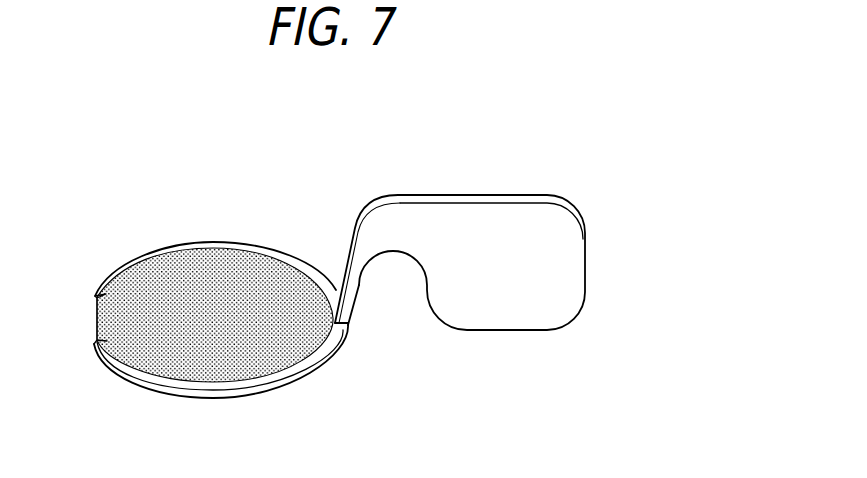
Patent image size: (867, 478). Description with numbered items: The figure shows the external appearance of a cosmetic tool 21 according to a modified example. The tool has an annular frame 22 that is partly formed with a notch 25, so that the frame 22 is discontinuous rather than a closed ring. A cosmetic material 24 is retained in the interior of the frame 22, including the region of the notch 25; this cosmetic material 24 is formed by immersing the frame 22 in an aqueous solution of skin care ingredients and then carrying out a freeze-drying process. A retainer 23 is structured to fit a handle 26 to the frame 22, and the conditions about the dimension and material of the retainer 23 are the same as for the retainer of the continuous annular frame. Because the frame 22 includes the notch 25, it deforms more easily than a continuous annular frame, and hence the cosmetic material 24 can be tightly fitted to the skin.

The cosmetic tool 21 is at (465, 172).
The frame 22 is at (318, 272).
The retainer 23 is at (247, 278).
The cosmetic material 24 is at (180, 273).
The notch 25 is at (80, 315).
The handle 26 is at (365, 232).